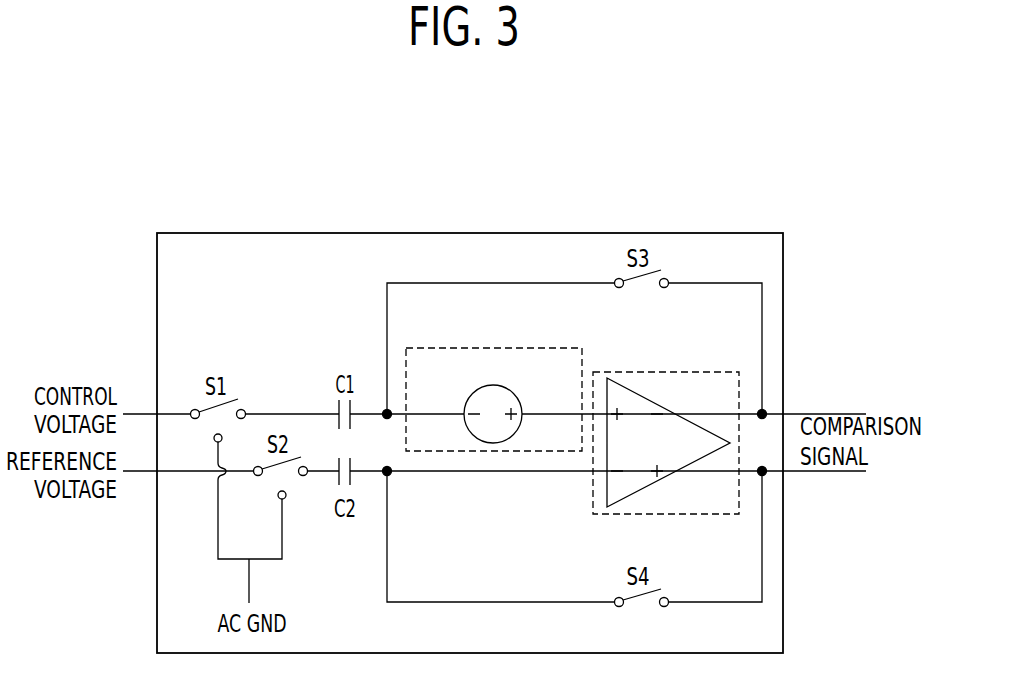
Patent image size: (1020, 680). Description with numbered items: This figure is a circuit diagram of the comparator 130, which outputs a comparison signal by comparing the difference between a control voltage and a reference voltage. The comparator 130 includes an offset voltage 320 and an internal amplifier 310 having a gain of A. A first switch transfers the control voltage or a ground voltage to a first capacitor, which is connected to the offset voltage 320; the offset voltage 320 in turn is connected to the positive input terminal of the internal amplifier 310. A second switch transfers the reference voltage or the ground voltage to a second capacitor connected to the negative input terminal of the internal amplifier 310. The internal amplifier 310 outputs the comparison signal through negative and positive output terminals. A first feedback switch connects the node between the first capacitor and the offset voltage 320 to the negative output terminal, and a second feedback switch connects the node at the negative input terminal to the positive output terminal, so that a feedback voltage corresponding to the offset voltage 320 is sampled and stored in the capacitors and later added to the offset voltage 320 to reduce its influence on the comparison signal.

The comparator 130 is at (745, 233).
The internal amplifier 310 is at (703, 372).
The offset voltage 320 is at (523, 348).